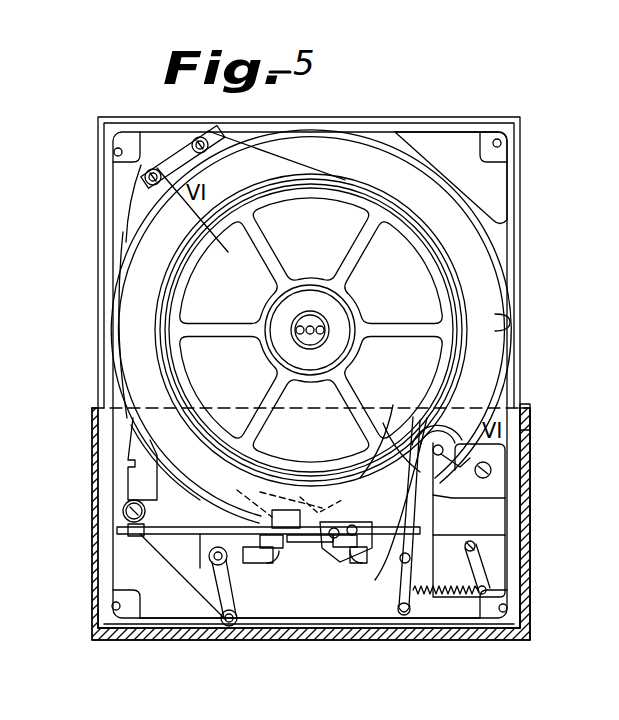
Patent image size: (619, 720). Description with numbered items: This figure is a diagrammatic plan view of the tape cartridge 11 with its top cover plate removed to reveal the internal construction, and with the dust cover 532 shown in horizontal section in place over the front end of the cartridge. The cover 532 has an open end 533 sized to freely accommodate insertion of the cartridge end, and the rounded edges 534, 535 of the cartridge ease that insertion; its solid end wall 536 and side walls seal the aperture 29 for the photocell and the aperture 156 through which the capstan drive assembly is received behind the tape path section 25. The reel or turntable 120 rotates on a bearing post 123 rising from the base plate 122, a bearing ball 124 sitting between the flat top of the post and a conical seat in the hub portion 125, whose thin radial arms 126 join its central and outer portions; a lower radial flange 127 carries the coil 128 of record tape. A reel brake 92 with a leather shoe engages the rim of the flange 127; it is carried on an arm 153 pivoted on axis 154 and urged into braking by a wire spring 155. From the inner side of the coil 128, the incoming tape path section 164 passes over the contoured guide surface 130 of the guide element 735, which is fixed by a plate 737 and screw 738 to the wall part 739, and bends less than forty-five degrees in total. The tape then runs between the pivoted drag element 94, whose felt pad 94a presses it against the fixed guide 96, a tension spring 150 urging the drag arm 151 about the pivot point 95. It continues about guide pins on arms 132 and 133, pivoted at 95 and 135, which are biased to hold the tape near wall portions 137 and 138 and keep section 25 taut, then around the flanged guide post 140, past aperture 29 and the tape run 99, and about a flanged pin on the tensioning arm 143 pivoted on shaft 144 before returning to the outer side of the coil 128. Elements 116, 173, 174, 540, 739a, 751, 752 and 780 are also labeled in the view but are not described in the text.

The cartridge 11 is at (97, 233).
The tape path section 25 is at (322, 606).
The aperture 29 is at (128, 478).
The reel brake 92 is at (258, 491).
The tape drag element 94 is at (433, 522).
The felt pad 94a is at (422, 546).
The pivot point 95 is at (378, 578).
The fixed guide 96 is at (352, 513).
The tape run 99 is at (112, 428).
The pivot 116 is at (398, 624).
The reel 120 is at (494, 250).
The base plate 122 is at (120, 268).
The bearing post 123 is at (313, 317).
The bearing ball 124 is at (308, 338).
The hub portion 125 is at (443, 328).
The radial arms 126 is at (222, 293).
The lower radial flange 127 is at (134, 316).
The coil of record tape 128 is at (466, 312).
The contoured guide surface 130 is at (452, 414).
The arm 132 is at (393, 604).
The arm 133 is at (239, 594).
The pivot point 135 is at (227, 561).
The wall portion 137 is at (406, 622).
The wall portion 138 is at (232, 624).
The flanged guide post 140 is at (122, 530).
The tensioning arm 143 is at (160, 168).
The pivot shaft 144 is at (207, 139).
The tension spring 150 is at (470, 600).
The drag arm 151 is at (433, 586).
The arm 153 is at (348, 492).
The axis 154 is at (307, 472).
The wire spring 155 is at (340, 462).
The aperture 156 is at (322, 642).
The incoming tape path section 164 is at (383, 423).
The block 173 is at (296, 540).
The block 174 is at (320, 550).
The cover 532 is at (534, 490).
The open end 533 is at (524, 418).
The edge 534 is at (112, 640).
The edge 535 is at (523, 640).
The end wall 536 is at (290, 640).
The clamp strip 540 is at (178, 172).
The guide element 735 is at (466, 428).
The plate 737 is at (497, 453).
The screw 738 is at (490, 468).
The wall part 739 is at (499, 521).
The hook 739a is at (511, 326).
The brake band 751 is at (152, 446).
The plate edge 752 is at (134, 236).
The bottom plate edge 780 is at (160, 610).